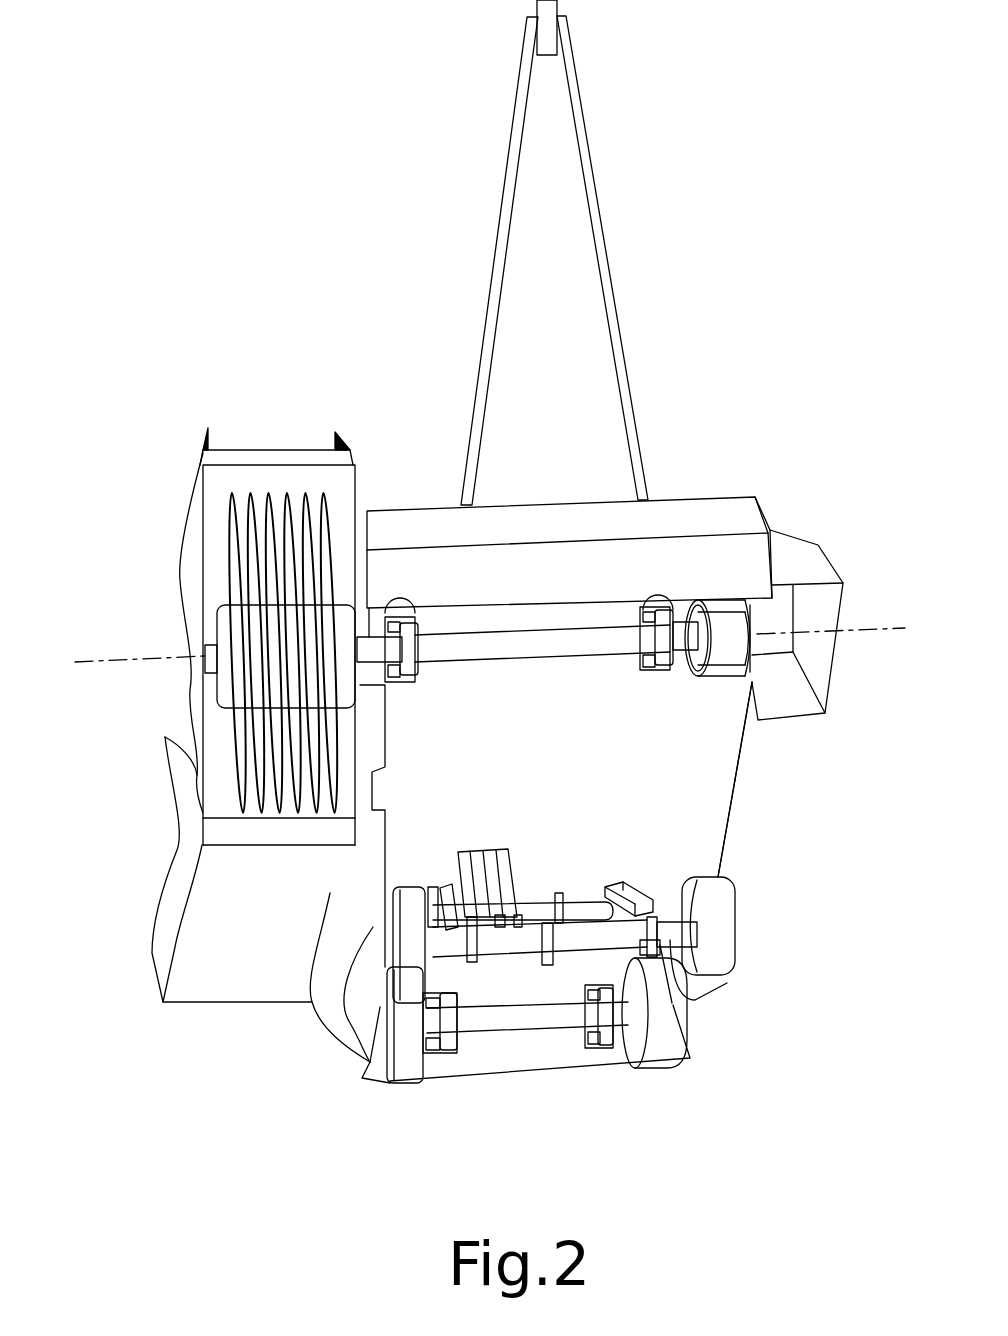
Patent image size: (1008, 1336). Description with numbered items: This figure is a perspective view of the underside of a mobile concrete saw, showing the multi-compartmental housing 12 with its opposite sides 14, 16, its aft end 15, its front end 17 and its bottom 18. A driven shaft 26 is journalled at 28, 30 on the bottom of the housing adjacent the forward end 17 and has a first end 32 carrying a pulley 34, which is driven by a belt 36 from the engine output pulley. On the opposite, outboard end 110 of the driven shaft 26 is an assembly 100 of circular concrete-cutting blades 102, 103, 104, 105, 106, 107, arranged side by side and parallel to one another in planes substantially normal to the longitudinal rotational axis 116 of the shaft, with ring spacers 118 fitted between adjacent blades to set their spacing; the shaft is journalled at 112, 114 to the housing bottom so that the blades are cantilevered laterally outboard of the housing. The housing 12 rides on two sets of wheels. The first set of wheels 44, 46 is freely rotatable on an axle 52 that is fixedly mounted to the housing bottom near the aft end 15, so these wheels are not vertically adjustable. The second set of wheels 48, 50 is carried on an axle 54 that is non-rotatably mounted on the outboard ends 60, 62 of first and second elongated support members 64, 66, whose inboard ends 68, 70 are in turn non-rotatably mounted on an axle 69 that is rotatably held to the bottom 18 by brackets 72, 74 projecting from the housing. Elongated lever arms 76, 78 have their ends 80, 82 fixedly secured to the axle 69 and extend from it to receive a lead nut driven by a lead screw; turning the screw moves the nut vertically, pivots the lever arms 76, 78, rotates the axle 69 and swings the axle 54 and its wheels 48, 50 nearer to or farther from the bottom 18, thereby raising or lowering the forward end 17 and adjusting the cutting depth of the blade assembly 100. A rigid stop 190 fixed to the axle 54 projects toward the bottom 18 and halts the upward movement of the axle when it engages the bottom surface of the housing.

The housing 12 is at (752, 761).
The side 14 is at (350, 1023).
The aft end 15 is at (615, 1073).
The side 16 is at (735, 790).
The front end 17 is at (697, 512).
The bottom 18 is at (697, 853).
The driven shaft 26 is at (530, 657).
The journal 28 is at (413, 657).
The journal 30 is at (663, 658).
The first end 32 is at (693, 620).
The pulley 34 is at (695, 682).
The belt 36 is at (740, 622).
The wheel 44 is at (405, 1083).
The wheel 46 is at (653, 1068).
The wheel 48 is at (383, 903).
The wheel 50 is at (735, 935).
The axle 52 is at (527, 1023).
The axle 54 is at (580, 942).
The outboard end 60 is at (480, 950).
The outboard end 62 is at (697, 995).
The first elongated support member 64 is at (463, 875).
The second elongated support member 66 is at (630, 893).
The inboard end 68 is at (623, 883).
The axle 69 is at (583, 900).
The inboard end 70 is at (442, 895).
The bracket 72 is at (648, 893).
The bracket 74 is at (432, 897).
The lever arm 76 is at (512, 870).
The lever arm 78 is at (477, 873).
The outboard end 80 is at (517, 917).
The outboard end 82 is at (500, 920).
The blade assembly 100 is at (218, 516).
The circular concrete-cutting blade 102 is at (232, 493).
The circular concrete-cutting blade 103 is at (250, 493).
The circular concrete-cutting blade 104 is at (268, 493).
The circular concrete-cutting blade 105 is at (287, 493).
The circular concrete-cutting blade 106 is at (305, 493).
The circular concrete-cutting blade 107 is at (323, 493).
The outboard end 110 is at (207, 650).
The journal 112 is at (650, 603).
The journal 114 is at (415, 635).
The longitudinal rotational axis 116 is at (108, 660).
The ring spacer 118 is at (250, 683).
The rigid stop 190 is at (560, 893).